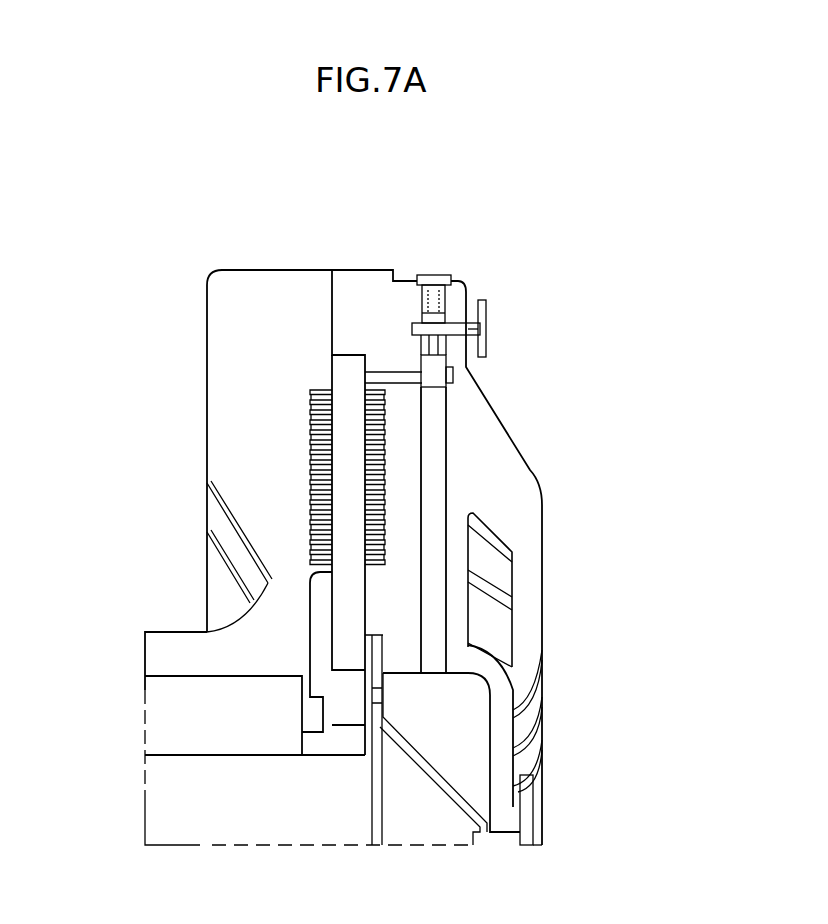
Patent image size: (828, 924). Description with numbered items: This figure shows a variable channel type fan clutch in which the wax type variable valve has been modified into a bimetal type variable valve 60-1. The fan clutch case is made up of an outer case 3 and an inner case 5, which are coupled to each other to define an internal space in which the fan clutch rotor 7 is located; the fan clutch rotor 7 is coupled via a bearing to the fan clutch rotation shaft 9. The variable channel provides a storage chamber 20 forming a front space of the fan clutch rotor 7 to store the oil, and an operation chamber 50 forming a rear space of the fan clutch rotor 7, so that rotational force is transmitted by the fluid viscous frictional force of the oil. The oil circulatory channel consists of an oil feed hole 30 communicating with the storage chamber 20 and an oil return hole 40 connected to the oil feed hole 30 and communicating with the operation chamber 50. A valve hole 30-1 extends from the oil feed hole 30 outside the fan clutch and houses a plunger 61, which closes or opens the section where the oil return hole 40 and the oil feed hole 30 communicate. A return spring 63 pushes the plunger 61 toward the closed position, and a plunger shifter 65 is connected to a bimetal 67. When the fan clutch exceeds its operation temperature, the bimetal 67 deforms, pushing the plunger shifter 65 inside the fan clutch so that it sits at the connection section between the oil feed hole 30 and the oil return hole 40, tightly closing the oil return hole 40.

The outer case 3 is at (273, 508).
The inner case 5 is at (525, 603).
The fan clutch rotor 7 is at (345, 620).
The fan clutch rotation shaft 9 is at (192, 808).
The storage chamber 20 is at (435, 717).
The oil feed hole 30 is at (434, 500).
The valve hole 30-1 is at (417, 347).
The oil return hole 40 is at (393, 375).
The operation chamber 50 is at (307, 458).
The bimetal type variable valve 60-1 is at (512, 293).
The plunger 61 is at (513, 368).
The return spring 63 is at (447, 298).
The plunger shifter 65 is at (455, 325).
The bimetal 67 is at (483, 332).